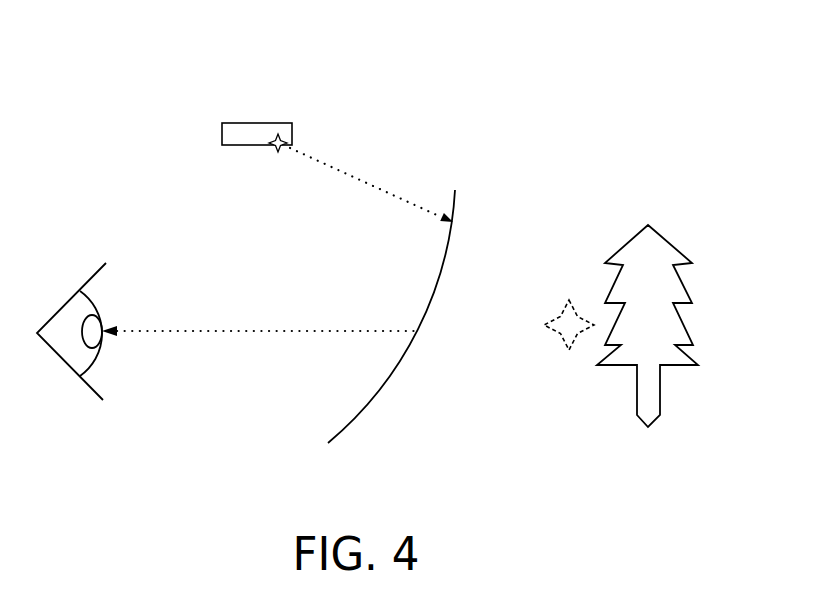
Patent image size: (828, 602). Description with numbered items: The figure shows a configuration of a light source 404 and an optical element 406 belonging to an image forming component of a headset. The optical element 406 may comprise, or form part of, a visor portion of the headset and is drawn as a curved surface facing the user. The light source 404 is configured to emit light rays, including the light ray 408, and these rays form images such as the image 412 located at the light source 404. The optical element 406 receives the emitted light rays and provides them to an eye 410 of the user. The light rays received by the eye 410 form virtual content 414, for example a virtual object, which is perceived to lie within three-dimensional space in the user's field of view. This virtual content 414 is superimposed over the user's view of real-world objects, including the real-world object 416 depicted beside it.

The light source 404 is at (258, 127).
The optical element 406 is at (372, 398).
The light ray 408 is at (350, 178).
The eye 410 is at (88, 318).
The image 412 is at (274, 148).
The virtual content 414 is at (565, 312).
The real-world object 416 is at (643, 228).